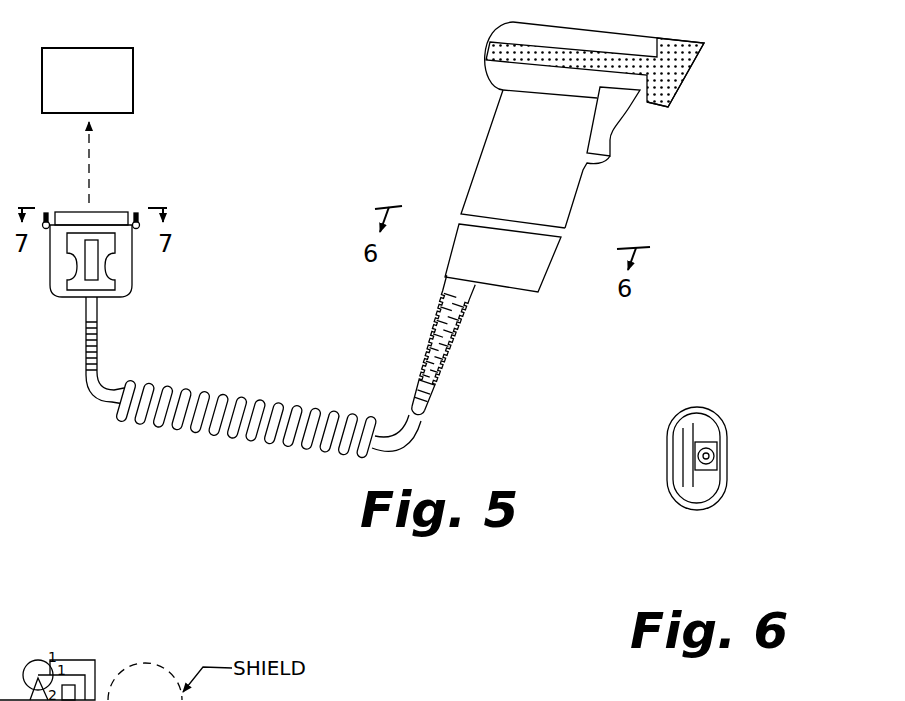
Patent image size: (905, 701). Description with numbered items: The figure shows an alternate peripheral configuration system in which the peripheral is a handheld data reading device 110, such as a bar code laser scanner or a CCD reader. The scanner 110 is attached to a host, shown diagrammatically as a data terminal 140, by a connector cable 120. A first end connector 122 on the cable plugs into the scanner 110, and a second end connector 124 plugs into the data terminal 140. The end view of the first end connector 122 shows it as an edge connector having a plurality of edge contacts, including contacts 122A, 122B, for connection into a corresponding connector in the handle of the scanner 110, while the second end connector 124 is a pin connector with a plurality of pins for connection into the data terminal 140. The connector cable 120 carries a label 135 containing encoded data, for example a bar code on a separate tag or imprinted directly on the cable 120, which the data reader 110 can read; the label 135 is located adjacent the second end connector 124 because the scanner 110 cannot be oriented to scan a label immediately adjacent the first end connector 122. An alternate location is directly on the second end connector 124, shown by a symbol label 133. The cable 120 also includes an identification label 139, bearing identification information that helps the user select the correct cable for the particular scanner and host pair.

In FIG. 5, the handheld data reading device 110 is at (488, 123).
In FIG. 5, the connector cable 120 is at (237, 450).
In FIG. 5, the first end connector 122 is at (542, 288).
In FIG. 6, the first end connector 122 is at (727, 487).
In FIG. 6, the edge contact 122A is at (680, 487).
In FIG. 6, the edge contact 122B is at (695, 423).
In FIG. 5, the second end connector 124 is at (131, 295).
In FIG. 5, the symbol label 133 is at (92, 262).
In FIG. 5, the label 135 is at (99, 336).
In FIG. 5, the identification label 139 is at (422, 411).
In FIG. 5, the data terminal 140 is at (87, 125).